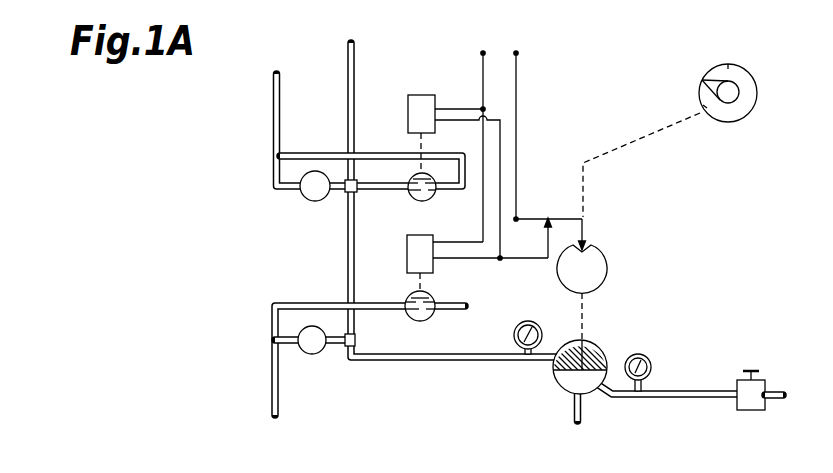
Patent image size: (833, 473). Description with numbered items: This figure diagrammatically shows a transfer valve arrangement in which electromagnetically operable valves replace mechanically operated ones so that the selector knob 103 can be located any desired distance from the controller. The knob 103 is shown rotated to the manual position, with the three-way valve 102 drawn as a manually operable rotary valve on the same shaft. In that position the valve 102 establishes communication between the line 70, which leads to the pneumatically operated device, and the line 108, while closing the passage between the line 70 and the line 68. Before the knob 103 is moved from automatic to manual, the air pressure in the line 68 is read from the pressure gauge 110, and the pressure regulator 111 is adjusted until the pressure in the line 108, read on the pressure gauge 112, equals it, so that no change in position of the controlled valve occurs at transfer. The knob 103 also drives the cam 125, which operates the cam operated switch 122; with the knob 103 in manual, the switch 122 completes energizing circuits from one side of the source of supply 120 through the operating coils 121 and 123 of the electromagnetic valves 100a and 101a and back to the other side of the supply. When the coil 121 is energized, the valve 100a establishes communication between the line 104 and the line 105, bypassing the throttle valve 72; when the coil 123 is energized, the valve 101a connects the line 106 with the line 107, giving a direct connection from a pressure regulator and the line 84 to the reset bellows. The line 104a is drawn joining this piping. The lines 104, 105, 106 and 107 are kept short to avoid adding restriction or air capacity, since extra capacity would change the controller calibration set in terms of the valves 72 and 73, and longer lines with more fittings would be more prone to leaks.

The line 68 is at (355, 67).
The line 70 is at (583, 417).
The throttle valve 72 is at (312, 200).
The valve 73 is at (307, 353).
The line 84 is at (775, 392).
The electromagnetically operable valve 100a is at (435, 198).
The electromagnetically operable valve 101a is at (418, 323).
The three-way valve 102 is at (600, 346).
The knob 103 is at (740, 120).
The line 104 is at (370, 152).
The inlet conduit 104a is at (273, 91).
The line 105 is at (382, 193).
The line 106 is at (453, 305).
The line 107 is at (270, 323).
The line 108 is at (705, 395).
The pressure gauge 110 is at (530, 320).
The pressure regulator 111 is at (752, 410).
The pressure gauge 112 is at (653, 365).
The source of supply 120 is at (499, 130).
The operating coil 121 is at (420, 95).
The cam operated switch 122 is at (532, 218).
The operating coil 123 is at (405, 252).
The cam 125 is at (600, 278).